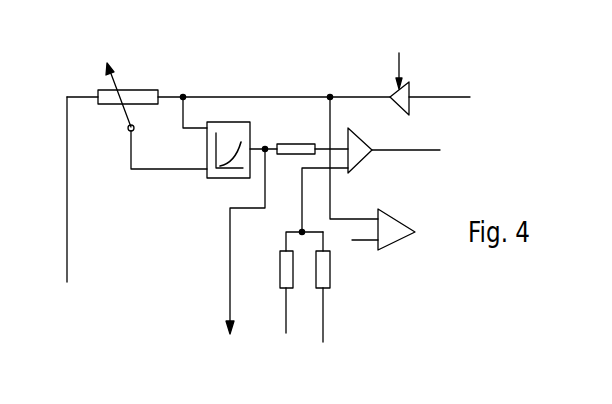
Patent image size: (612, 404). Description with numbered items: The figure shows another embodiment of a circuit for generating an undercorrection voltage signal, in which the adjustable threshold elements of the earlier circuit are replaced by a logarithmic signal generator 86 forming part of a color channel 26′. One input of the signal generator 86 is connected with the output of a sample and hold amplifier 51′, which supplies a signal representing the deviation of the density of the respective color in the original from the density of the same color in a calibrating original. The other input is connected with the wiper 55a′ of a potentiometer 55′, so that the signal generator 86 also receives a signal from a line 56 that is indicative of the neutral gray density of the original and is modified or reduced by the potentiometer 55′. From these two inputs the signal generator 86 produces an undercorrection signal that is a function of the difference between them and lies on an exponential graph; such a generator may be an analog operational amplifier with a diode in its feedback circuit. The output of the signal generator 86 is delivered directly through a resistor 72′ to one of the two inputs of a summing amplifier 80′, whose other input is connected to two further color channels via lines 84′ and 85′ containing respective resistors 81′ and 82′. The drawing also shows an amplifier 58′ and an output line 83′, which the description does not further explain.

The color channel 26′ is at (150, 240).
The line 56 is at (67, 243).
The potentiometer 55′ is at (147, 90).
The wiper 55a′ is at (108, 63).
The logarithmic signal generator 86 is at (207, 142).
The resistor 72′ is at (293, 144).
The summing amplifier 80′ is at (360, 159).
The sample and hold amplifier 51′ is at (430, 84).
The amplifier 58′ is at (402, 222).
The output line 83′ is at (230, 278).
The resistor 81′ is at (280, 260).
The resistor 82′ is at (330, 265).
The line 84′ is at (286, 318).
The line 85′ is at (323, 316).